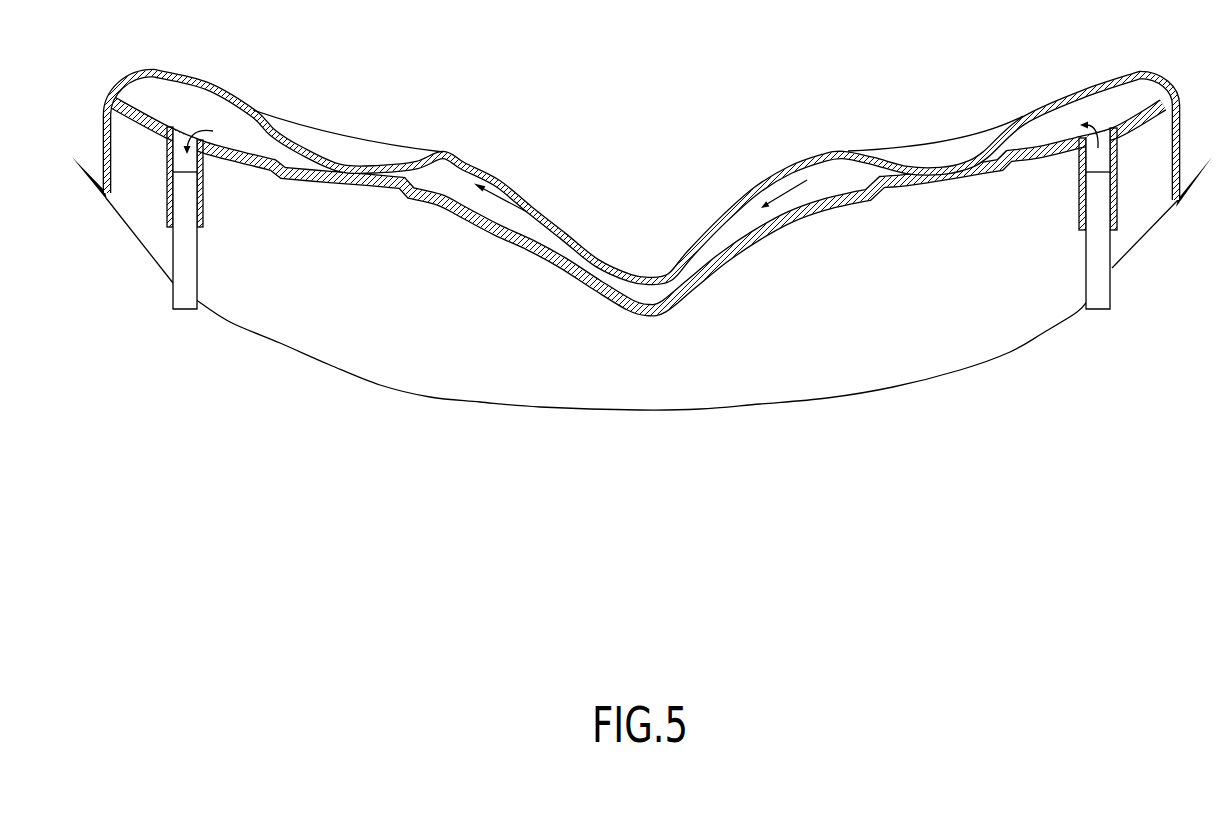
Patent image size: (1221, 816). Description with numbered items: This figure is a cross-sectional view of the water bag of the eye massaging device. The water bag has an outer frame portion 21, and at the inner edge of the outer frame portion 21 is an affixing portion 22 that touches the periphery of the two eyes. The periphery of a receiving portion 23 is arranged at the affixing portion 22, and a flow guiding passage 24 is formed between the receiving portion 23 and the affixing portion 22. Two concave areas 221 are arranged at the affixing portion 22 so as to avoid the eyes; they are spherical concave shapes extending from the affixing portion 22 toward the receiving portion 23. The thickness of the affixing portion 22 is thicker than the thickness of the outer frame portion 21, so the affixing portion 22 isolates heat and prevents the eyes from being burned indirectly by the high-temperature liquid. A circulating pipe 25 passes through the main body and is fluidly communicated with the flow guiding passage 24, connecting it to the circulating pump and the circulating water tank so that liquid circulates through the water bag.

The outer frame portion 21 is at (104, 137).
The affixing portion 22 is at (800, 164).
The concave areas 221 is at (358, 143).
The receiving portion 23 is at (856, 205).
The flow guiding passage 24 is at (1111, 86).
The circulating pipe 25 is at (180, 286).